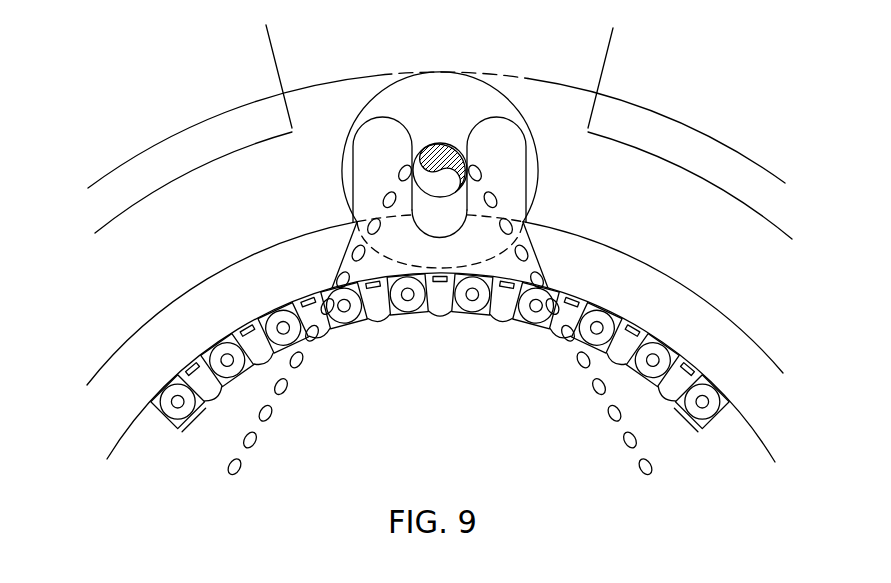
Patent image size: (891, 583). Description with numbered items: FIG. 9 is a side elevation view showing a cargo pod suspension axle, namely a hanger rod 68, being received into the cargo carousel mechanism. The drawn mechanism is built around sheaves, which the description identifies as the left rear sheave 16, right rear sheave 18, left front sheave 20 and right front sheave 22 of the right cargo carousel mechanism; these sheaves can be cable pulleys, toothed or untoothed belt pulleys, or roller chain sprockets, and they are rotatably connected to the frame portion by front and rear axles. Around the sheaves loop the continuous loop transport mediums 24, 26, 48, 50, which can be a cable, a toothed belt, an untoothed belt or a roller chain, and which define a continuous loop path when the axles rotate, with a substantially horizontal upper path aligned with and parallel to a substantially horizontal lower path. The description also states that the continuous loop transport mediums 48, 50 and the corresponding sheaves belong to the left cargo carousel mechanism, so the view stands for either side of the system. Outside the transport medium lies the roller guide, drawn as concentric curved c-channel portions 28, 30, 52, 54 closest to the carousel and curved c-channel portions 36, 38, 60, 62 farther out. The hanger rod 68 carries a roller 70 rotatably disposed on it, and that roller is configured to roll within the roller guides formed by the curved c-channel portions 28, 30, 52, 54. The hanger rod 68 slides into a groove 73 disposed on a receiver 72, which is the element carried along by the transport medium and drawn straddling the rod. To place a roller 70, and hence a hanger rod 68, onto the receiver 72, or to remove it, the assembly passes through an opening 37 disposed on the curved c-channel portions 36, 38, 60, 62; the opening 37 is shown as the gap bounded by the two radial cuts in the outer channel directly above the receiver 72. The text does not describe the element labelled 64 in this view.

The left rear sheave 16 is at (441, 367).
The right rear sheave 18 is at (441, 367).
The left front sheave 20 is at (441, 367).
The right front sheave 22 is at (490, 402).
The continuous loop transport medium 24 is at (439, 320).
The continuous loop transport medium 26 is at (439, 320).
The continuous loop transport medium 48 is at (439, 320).
The continuous loop transport medium 50 is at (439, 320).
The curved c-channel portion 28 is at (435, 297).
The curved c-channel portion 30 is at (435, 297).
The curved c-channel portion 52 is at (435, 297).
The curved c-channel portion 54 is at (710, 228).
The curved c-channel portion 36 is at (466, 132).
The curved c-channel portion 38 is at (466, 132).
The curved c-channel portion 60 is at (466, 132).
The curved c-channel portion 62 is at (703, 150).
The opening 37 is at (453, 160).
The chain links 64 is at (578, 364).
The hanger rod 68 is at (443, 145).
The roller 70 is at (400, 104).
The receiver 72 is at (502, 162).
The groove 73 is at (421, 128).